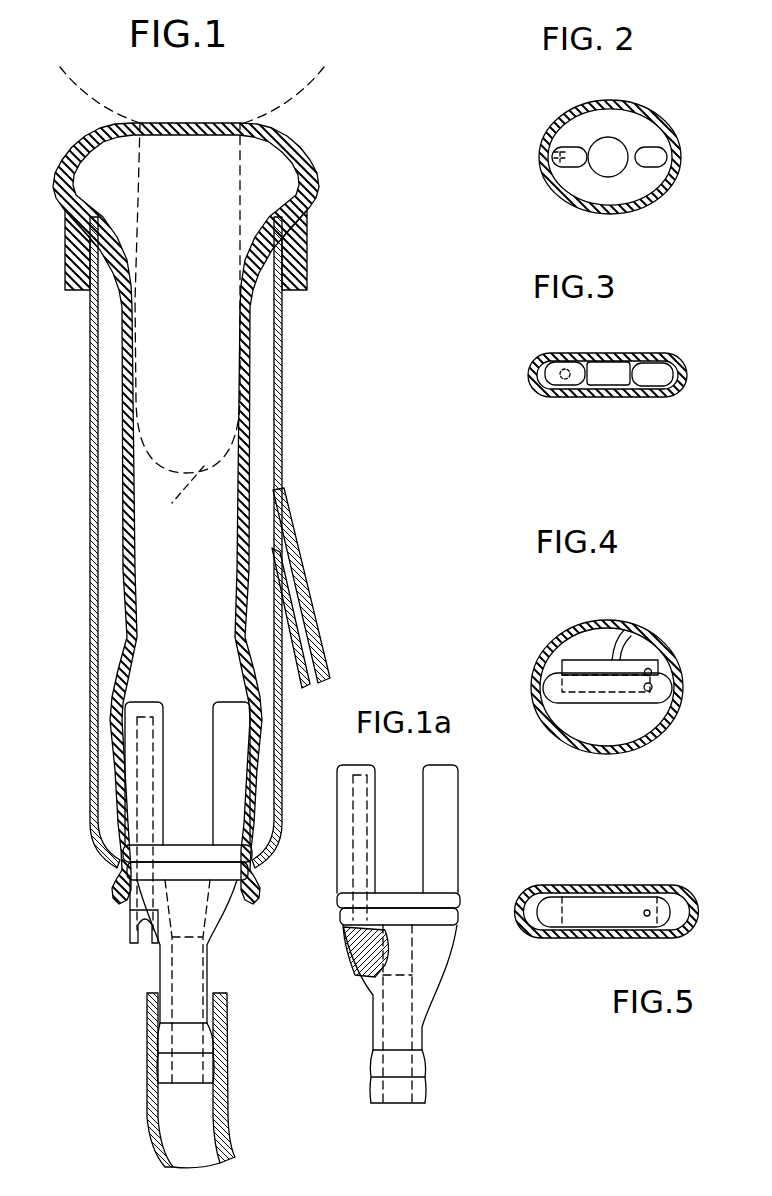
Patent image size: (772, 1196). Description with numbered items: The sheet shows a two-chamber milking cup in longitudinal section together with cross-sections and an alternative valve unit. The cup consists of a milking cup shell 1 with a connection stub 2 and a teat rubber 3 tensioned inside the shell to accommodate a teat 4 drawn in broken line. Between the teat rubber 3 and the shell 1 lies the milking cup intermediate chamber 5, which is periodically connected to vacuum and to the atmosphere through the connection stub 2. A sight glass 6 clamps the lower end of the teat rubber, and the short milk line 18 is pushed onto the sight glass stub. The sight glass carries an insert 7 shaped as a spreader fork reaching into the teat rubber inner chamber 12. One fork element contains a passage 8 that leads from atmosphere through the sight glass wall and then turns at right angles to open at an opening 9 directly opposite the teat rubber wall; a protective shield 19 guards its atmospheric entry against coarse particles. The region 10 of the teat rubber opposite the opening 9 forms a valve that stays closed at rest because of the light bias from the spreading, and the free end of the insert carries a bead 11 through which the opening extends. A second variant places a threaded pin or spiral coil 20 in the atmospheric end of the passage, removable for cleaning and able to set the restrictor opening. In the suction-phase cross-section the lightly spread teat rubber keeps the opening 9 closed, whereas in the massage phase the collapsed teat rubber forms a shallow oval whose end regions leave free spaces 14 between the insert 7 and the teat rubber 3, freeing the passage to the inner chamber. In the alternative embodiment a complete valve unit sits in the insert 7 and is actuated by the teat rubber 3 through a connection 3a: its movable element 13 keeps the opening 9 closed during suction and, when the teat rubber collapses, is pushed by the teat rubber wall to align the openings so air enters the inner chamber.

In FIG. 1, the milking cup shell 1 is at (90, 442).
In FIG. 1, the connection stub 2 is at (318, 613).
In FIG. 1, the teat rubber 3 is at (250, 512).
In FIG. 2, the teat rubber 3 is at (600, 210).
In FIG. 3, the teat rubber 3 is at (590, 400).
In FIG. 4, the teat rubber 3 is at (600, 625).
In FIG. 5, the teat rubber 3 is at (540, 935).
In FIG. 4, the connection 3a is at (635, 640).
In FIG. 1, the teat 4 is at (172, 503).
In FIG. 1, the milking cup intermediate chamber 5 is at (262, 418).
In FIG. 1, the sight glass 6 is at (208, 963).
In FIG. 1a, the sight glass 6 is at (422, 995).
In FIG. 2, the sight glass 6 is at (638, 128).
In FIG. 4, the sight glass 6 is at (620, 720).
In FIG. 1, the insert 7 is at (223, 787).
In FIG. 1a, the insert 7 is at (432, 817).
In FIG. 2, the insert 7 is at (578, 147).
In FIG. 3, the insert 7 is at (580, 360).
In FIG. 4, the insert 7 is at (553, 700).
In FIG. 5, the insert 7 is at (618, 915).
In FIG. 1, the passage 8 is at (145, 797).
In FIG. 1a, the passage 8 is at (357, 851).
In FIG. 2, the passage 8 is at (565, 170).
In FIG. 3, the passage 8 is at (560, 386).
In FIG. 1, the opening 9 is at (132, 700).
In FIG. 2, the opening 9 is at (555, 152).
In FIG. 3, the opening 9 is at (560, 362).
In FIG. 4, the opening 9 is at (655, 687).
In FIG. 5, the opening 9 is at (650, 910).
In FIG. 1, the region of the teat rubber 10 is at (112, 710).
In FIG. 1, the bead 11 is at (247, 712).
In FIG. 1, the teat rubber inner chamber 12 is at (165, 563).
In FIG. 4, the movable element 13 is at (630, 665).
In FIG. 5, the movable element 13 is at (600, 893).
In FIG. 3, the free spaces 14 is at (543, 373).
In FIG. 1, the short milk line 18 is at (222, 1060).
In FIG. 1, the protective shield 19 is at (130, 938).
In FIG. 1a, the spiral coil 20 is at (356, 964).